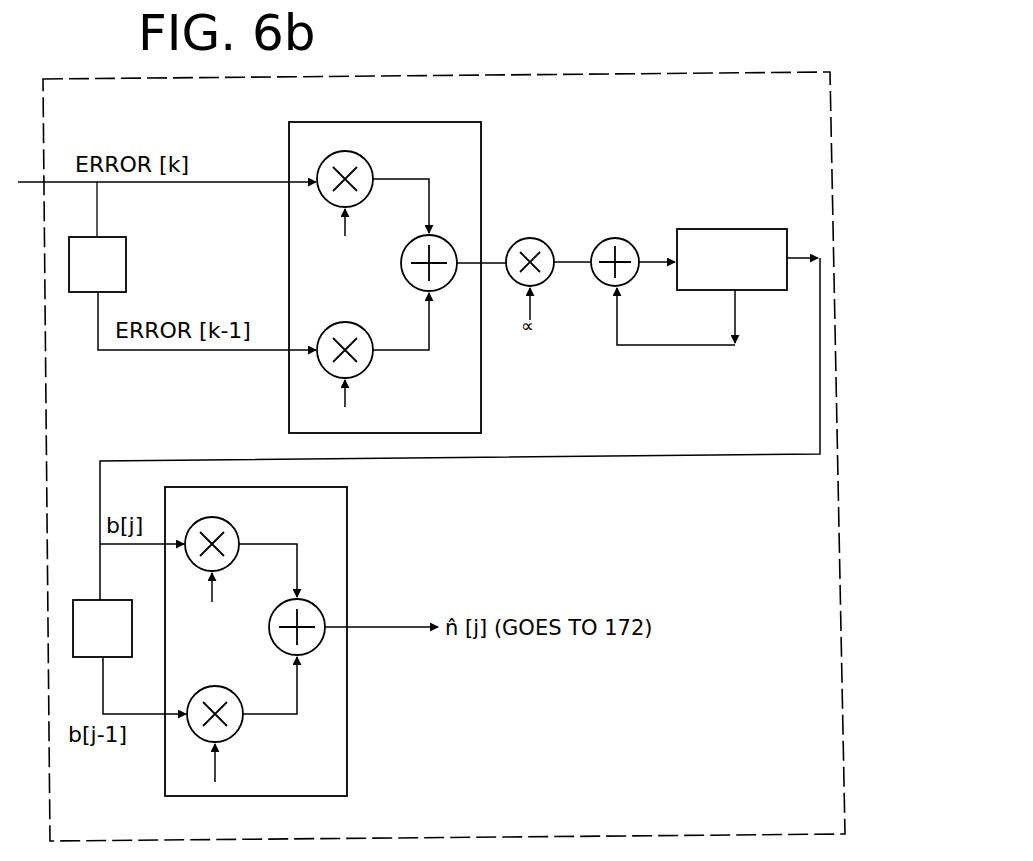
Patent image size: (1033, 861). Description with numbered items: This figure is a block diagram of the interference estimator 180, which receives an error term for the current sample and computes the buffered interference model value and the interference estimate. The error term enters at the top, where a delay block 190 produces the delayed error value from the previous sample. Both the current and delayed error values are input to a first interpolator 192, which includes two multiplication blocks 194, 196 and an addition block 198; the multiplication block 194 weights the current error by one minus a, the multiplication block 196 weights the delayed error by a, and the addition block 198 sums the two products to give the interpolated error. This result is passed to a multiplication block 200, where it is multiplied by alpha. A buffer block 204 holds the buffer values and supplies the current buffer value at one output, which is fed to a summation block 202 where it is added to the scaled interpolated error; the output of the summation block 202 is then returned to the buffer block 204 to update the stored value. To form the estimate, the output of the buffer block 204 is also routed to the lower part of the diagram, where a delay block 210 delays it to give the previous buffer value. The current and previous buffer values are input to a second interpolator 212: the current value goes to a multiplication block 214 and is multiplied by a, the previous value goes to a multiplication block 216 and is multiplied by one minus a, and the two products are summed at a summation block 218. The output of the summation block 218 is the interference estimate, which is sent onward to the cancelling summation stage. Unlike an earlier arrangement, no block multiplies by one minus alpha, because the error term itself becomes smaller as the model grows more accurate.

The interference estimator 180 is at (681, 72).
The delay block 190 is at (126, 268).
The first interpolator 192 is at (481, 151).
The multiplication block 194 is at (371, 168).
The multiplication block 196 is at (368, 371).
The addition block 198 is at (407, 281).
The multiplication block 200 is at (545, 240).
The summation block 202 is at (619, 239).
The buffer block 204 is at (722, 229).
The delay block 210 is at (80, 600).
The second interpolator 212 is at (347, 502).
The multiplication block 214 is at (238, 530).
The multiplication block 216 is at (240, 728).
The summation block 218 is at (272, 642).